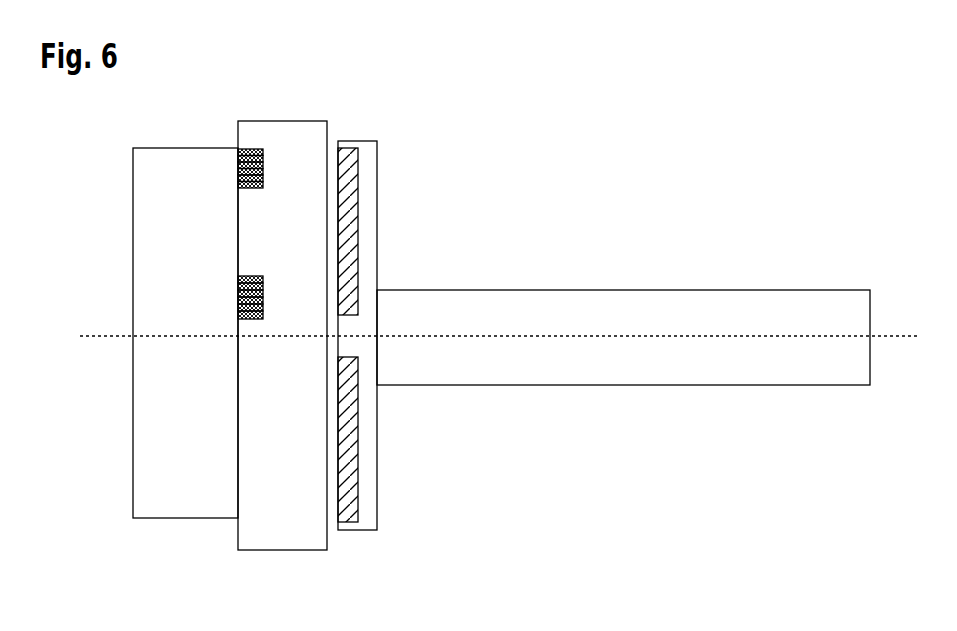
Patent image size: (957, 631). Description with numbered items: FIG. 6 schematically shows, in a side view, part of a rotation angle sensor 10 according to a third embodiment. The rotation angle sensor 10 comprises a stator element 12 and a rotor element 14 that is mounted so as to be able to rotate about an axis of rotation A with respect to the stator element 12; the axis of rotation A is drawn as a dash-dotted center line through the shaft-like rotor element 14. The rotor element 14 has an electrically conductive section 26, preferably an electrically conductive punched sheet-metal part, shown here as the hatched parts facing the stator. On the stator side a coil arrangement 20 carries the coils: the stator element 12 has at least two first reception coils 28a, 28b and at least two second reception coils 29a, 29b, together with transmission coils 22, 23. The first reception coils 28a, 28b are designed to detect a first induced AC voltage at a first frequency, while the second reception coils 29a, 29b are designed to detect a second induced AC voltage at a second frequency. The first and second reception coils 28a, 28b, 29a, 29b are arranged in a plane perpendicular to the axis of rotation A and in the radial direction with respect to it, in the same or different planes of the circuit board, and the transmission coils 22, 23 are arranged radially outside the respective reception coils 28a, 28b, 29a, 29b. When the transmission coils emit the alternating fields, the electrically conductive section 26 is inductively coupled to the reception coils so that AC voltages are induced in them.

The rotation angle sensor 10 is at (713, 78).
The stator element 12 is at (172, 548).
The rotor element 14 is at (500, 190).
The coil arrangement 20 is at (287, 185).
The transmission coil 22 is at (243, 149).
The transmission coil 23 is at (263, 168).
The electrically conductive section 26 is at (350, 163).
The first reception coil 28a is at (263, 172).
The first reception coil 28b is at (263, 178).
The second reception coil 29a is at (263, 184).
The second reception coil 29b is at (263, 190).
The axis of rotation A is at (80, 337).